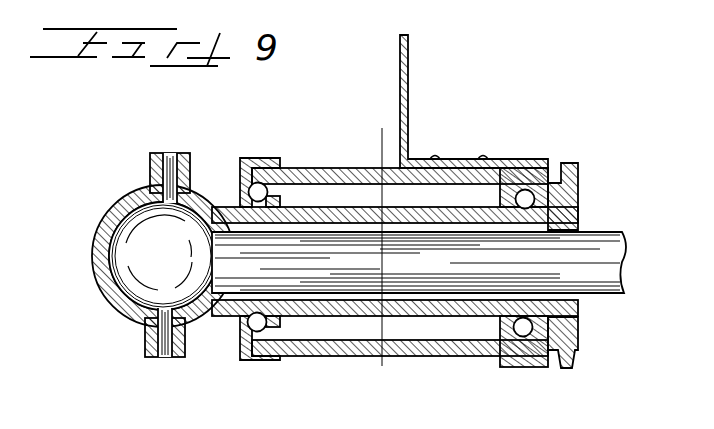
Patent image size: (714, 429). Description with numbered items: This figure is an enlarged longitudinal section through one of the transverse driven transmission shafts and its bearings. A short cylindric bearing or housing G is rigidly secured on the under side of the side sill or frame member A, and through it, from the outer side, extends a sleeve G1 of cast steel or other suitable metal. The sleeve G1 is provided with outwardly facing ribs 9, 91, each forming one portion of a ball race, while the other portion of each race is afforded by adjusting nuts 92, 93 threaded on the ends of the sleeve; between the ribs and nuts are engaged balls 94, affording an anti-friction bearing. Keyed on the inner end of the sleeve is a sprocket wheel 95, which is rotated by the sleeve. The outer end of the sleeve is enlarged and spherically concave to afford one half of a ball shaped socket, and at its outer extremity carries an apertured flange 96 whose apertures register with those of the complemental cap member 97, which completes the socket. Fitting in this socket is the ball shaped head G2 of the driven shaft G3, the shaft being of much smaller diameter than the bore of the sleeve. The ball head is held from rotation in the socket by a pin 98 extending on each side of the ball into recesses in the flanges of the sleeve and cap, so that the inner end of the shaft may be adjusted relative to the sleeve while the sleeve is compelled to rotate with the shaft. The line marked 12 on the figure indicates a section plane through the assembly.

The outwardly facing rib 9 is at (282, 178).
The outwardly facing rib 91 is at (512, 200).
The adjusting nut 92 is at (250, 158).
The adjusting nut 93 is at (550, 167).
The balls 94 is at (530, 200).
The sprocket wheel 95 is at (197, 190).
The flange 96 is at (182, 343).
The cap member 97 is at (133, 310).
The pin 98 is at (168, 170).
The cylindric bearing or housing G is at (430, 348).
The sleeve G1 is at (325, 212).
The ball shaped end or head G2 is at (140, 262).
The driven shaft G3 is at (603, 250).
The side sill or frame member A is at (403, 63).
The section line 12- 12 is at (389, 147).